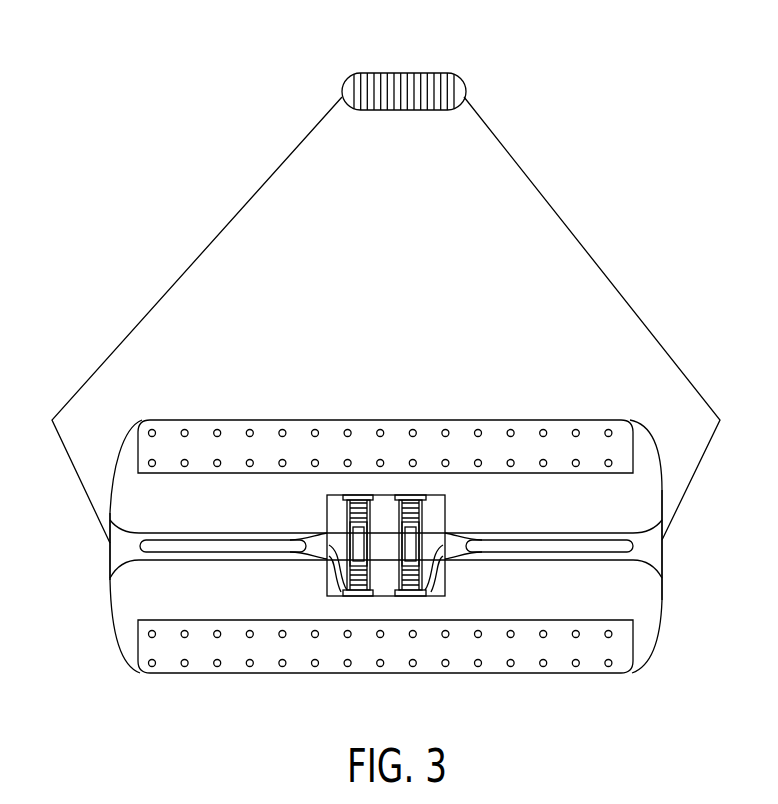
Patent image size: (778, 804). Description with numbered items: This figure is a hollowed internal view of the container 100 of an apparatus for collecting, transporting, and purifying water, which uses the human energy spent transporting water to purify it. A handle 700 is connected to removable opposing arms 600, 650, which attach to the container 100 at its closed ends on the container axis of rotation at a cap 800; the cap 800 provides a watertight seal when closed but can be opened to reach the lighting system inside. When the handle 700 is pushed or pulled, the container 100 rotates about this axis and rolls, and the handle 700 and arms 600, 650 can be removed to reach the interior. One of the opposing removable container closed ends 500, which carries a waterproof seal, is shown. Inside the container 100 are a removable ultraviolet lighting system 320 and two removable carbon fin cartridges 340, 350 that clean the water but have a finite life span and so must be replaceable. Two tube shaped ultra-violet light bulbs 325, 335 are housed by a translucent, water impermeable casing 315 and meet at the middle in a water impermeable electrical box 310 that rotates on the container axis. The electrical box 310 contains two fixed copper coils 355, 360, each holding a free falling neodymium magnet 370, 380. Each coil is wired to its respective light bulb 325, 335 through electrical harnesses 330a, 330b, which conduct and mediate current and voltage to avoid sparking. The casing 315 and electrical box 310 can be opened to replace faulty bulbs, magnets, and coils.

The container 100 is at (543, 420).
The electrical box 310 is at (325, 498).
The casing 315 is at (233, 560).
The ultraviolet lighting system 320 is at (555, 533).
The ultra-violet light bulb 325 is at (200, 548).
The electrical harness 330a is at (330, 577).
The electrical harness 330b is at (440, 577).
The ultra-violet light bulb 335 is at (565, 548).
The carbon fin cartridge 340 is at (460, 473).
The carbon fin cartridge 350 is at (567, 620).
The copper coil 355 is at (362, 497).
The copper coil 360 is at (418, 497).
The neodymium magnet 370 is at (362, 547).
The neodymium magnet 380 is at (410, 543).
The container closed end 500 is at (663, 542).
The opposing arm 600 is at (210, 242).
The opposing arm 650 is at (588, 238).
The handle 700 is at (404, 73).
The cap 800 is at (108, 547).